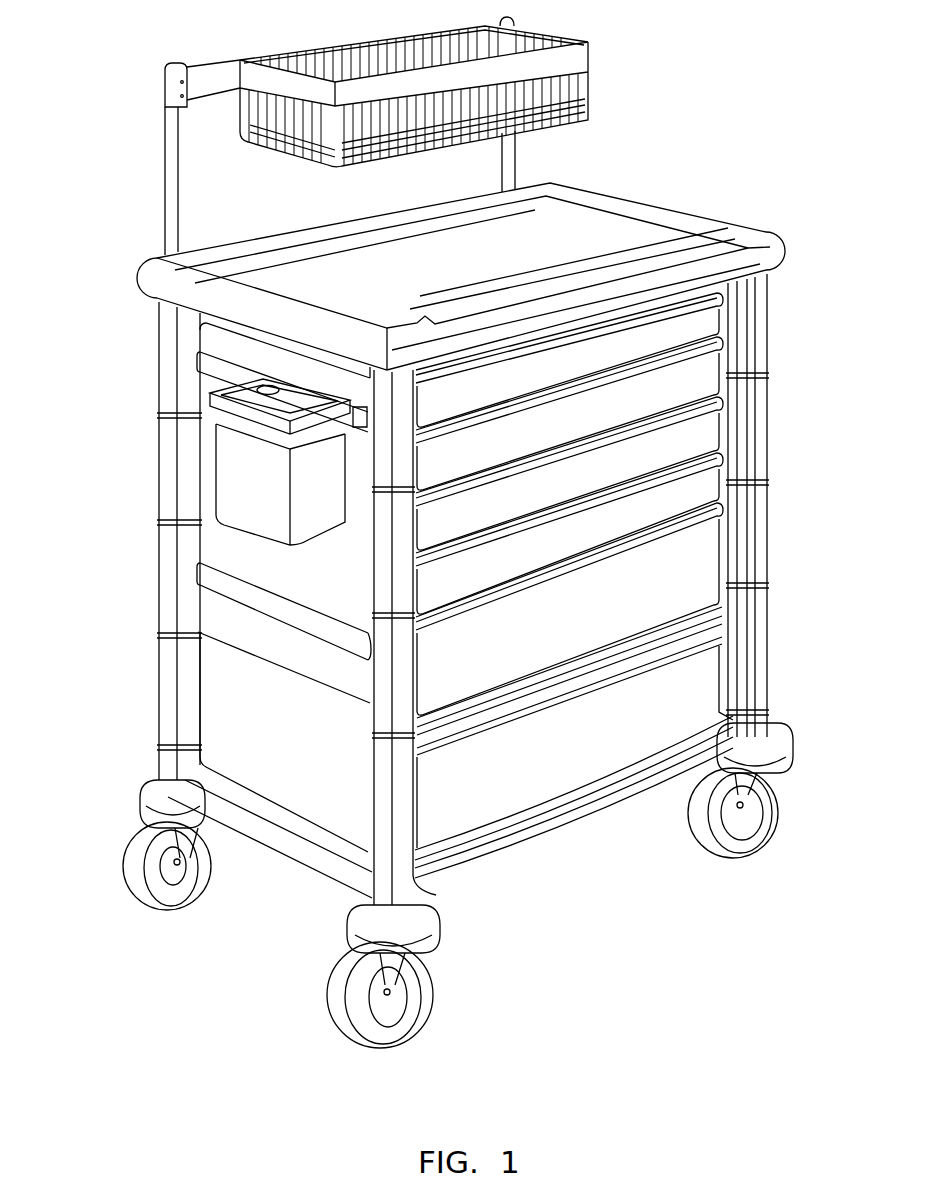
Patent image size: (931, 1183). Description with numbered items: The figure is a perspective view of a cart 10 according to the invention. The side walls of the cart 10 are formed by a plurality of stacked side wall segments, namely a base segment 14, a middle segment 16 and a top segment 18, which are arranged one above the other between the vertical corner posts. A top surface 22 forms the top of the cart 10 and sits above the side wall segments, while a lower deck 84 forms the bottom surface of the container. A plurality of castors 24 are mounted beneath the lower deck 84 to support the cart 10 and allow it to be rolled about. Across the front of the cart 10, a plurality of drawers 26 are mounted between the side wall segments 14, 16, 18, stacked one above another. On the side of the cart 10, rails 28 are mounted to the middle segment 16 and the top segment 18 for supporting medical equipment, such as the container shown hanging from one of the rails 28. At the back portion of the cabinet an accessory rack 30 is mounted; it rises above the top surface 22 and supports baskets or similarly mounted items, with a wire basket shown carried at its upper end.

The cart 10 is at (135, 548).
The base segment 14 is at (288, 742).
The middle segment 16 is at (357, 563).
The top segment 18 is at (283, 365).
The top surface 22 is at (463, 272).
The castors 24 is at (120, 857).
The drawers 26 is at (578, 375).
The rails 28 is at (205, 371).
The accessory rack 30 is at (165, 182).
The lower deck 84 is at (707, 722).